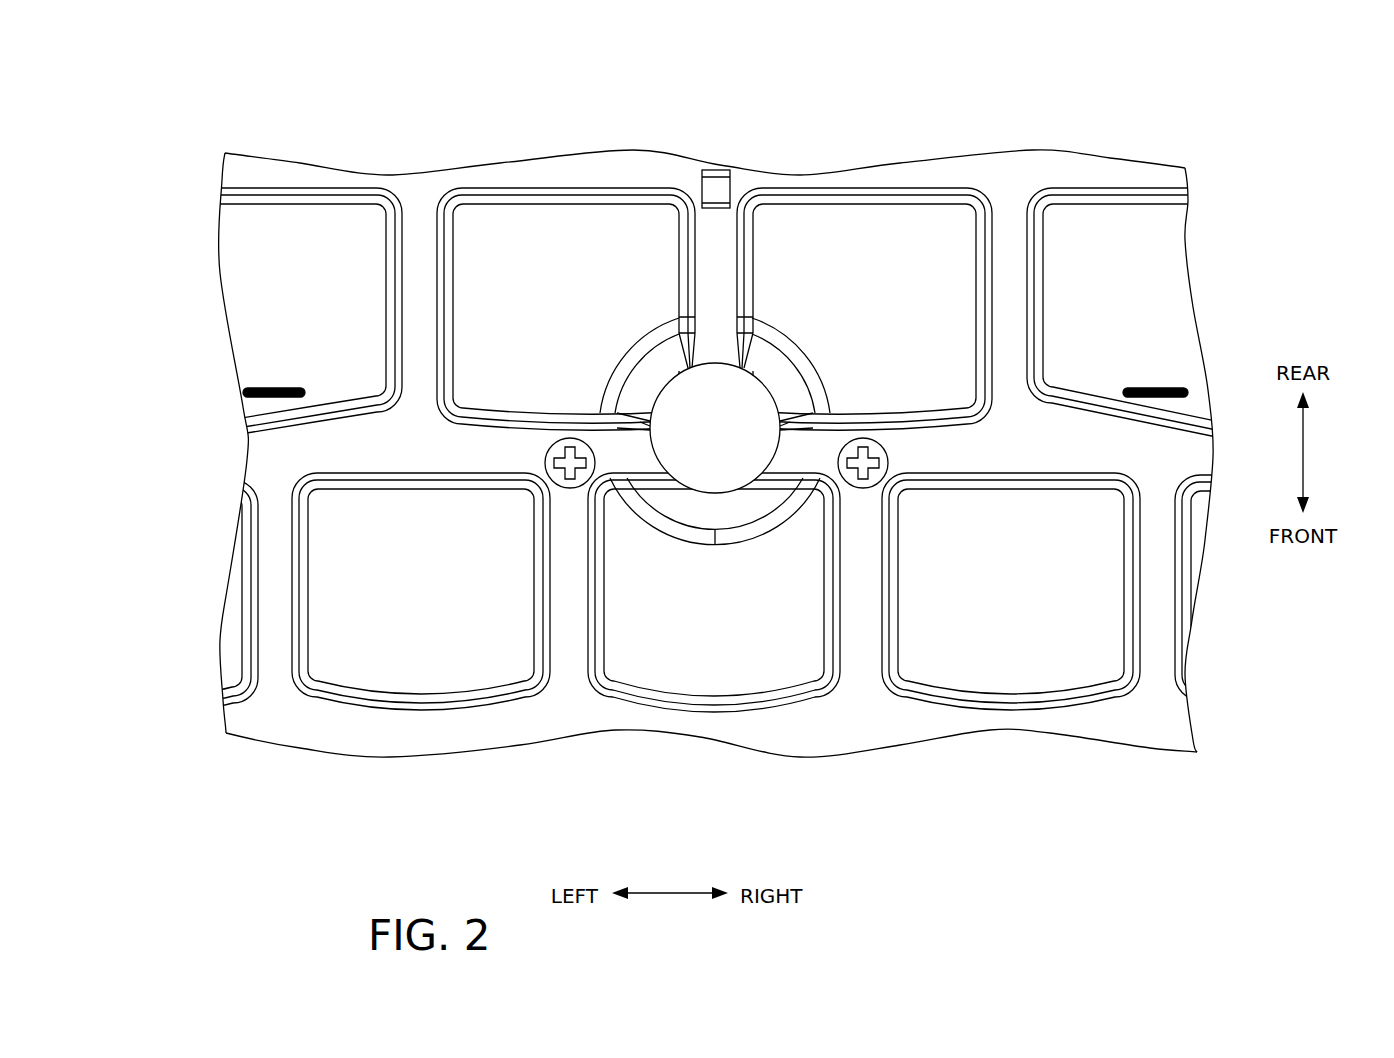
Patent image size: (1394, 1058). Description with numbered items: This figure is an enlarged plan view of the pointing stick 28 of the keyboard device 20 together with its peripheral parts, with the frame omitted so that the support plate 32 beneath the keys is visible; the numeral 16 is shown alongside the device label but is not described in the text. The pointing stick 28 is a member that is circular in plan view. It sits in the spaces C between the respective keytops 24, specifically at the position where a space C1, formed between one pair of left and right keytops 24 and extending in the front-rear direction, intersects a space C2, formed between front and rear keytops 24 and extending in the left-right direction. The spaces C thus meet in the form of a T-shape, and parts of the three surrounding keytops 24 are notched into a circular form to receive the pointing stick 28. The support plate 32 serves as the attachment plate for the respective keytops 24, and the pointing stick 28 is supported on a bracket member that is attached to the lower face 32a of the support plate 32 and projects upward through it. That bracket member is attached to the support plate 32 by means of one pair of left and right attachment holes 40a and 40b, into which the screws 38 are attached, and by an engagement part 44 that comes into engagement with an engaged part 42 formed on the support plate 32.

The keyboard device 20 is at (157, 78).
The cover 16 is at (200, 78).
The keytops 24 is at (297, 237).
The pointing stick 28 is at (697, 455).
The support plate 32 is at (270, 716).
The lower face of support plate 32a is at (857, 720).
The screws 38 is at (675, 652).
The attachment hole 40a is at (540, 488).
The attachment hole 40b is at (878, 478).
The engaged part 42 is at (716, 190).
The engagement part 44 is at (715, 190).
The space C1 is at (718, 257).
The space C2 is at (607, 447).
The spaces C is at (715, 431).